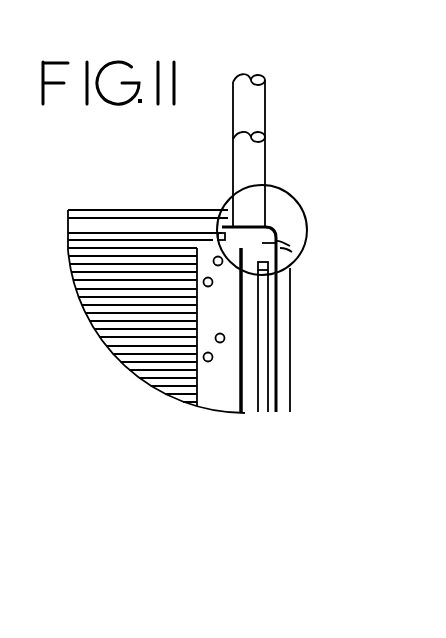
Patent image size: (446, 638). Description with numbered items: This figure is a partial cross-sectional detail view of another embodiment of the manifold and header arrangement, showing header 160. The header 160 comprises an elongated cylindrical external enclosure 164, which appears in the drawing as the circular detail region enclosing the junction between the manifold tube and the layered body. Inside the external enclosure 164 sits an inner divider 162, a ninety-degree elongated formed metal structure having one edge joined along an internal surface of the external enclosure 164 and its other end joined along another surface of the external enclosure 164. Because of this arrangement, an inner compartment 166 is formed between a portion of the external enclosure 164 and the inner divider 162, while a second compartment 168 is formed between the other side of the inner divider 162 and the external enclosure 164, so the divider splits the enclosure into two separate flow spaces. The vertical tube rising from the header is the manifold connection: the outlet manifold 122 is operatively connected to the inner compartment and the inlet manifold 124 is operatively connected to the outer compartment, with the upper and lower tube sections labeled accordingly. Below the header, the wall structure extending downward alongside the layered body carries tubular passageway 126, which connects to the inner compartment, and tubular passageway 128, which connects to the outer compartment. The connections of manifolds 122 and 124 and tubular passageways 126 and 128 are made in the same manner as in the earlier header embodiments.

The outlet manifold 122 is at (265, 163).
The inlet manifold 124 is at (265, 117).
The tubular passageway 126 is at (268, 353).
The tubular passageway 128 is at (291, 321).
The header 160 is at (306, 213).
The inner divider 162 is at (290, 246).
The external enclosure 164 is at (307, 235).
The inner compartment 166 is at (292, 252).
The compartment 168 is at (275, 203).